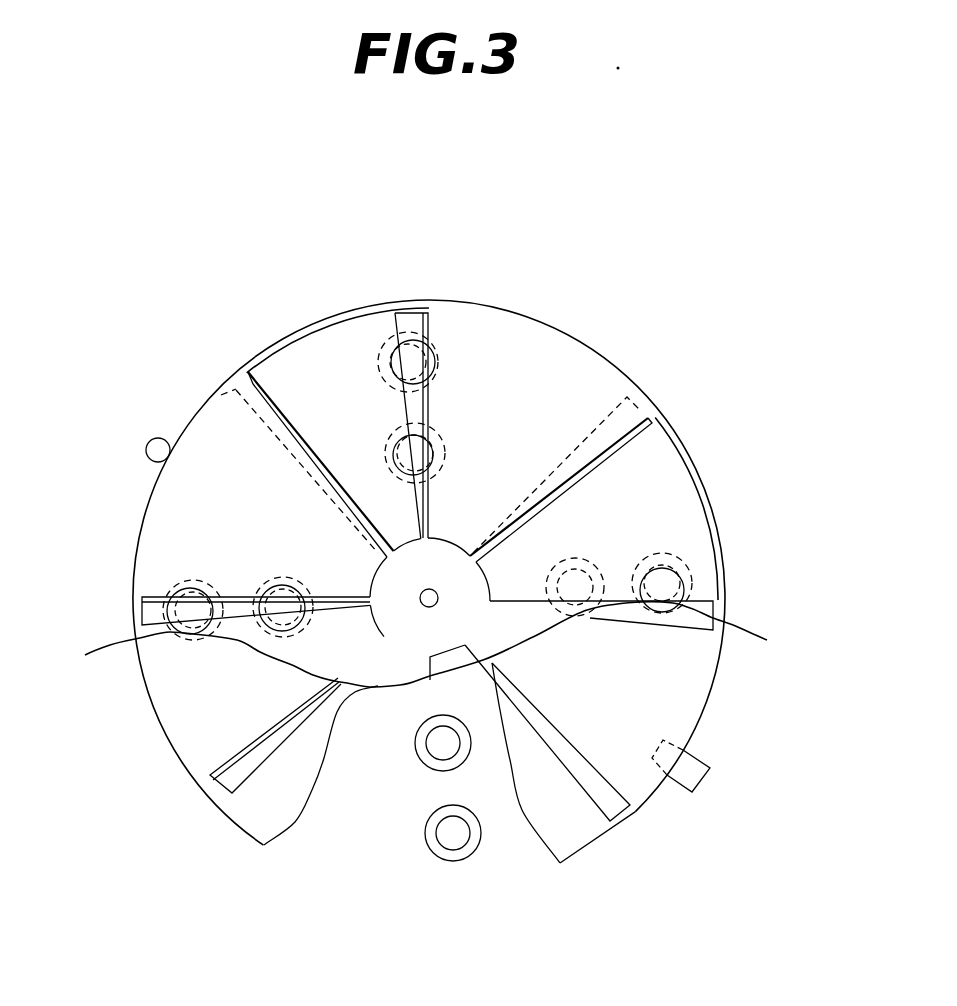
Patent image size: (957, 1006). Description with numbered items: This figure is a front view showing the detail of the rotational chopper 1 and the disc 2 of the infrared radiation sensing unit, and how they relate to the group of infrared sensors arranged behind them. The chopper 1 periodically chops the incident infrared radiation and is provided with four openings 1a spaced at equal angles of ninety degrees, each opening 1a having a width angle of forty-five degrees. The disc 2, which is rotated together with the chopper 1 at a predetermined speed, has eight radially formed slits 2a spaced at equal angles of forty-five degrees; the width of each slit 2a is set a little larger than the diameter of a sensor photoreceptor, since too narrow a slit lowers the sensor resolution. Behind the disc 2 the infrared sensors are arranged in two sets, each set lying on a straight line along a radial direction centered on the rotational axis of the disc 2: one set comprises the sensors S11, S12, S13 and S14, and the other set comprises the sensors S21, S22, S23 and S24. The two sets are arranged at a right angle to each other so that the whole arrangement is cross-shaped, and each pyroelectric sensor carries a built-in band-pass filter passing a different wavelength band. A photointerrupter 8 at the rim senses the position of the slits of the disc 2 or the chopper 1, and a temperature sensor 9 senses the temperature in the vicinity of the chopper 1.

The rotational chopper 1 is at (193, 393).
The openings of the chopper 1a is at (267, 393).
The disc 2 is at (197, 793).
The slits of the disc 2a is at (228, 388).
The photointerrupter 8 is at (710, 780).
The temperature sensor 9 is at (147, 443).
The infrared sensor S11 is at (430, 328).
The infrared sensor S12 is at (420, 418).
The infrared sensor S13 is at (443, 747).
The infrared sensor S14 is at (447, 833).
The infrared sensor S21 is at (155, 637).
The infrared sensor S22 is at (245, 625).
The infrared sensor S23 is at (593, 570).
The infrared sensor S24 is at (677, 573).